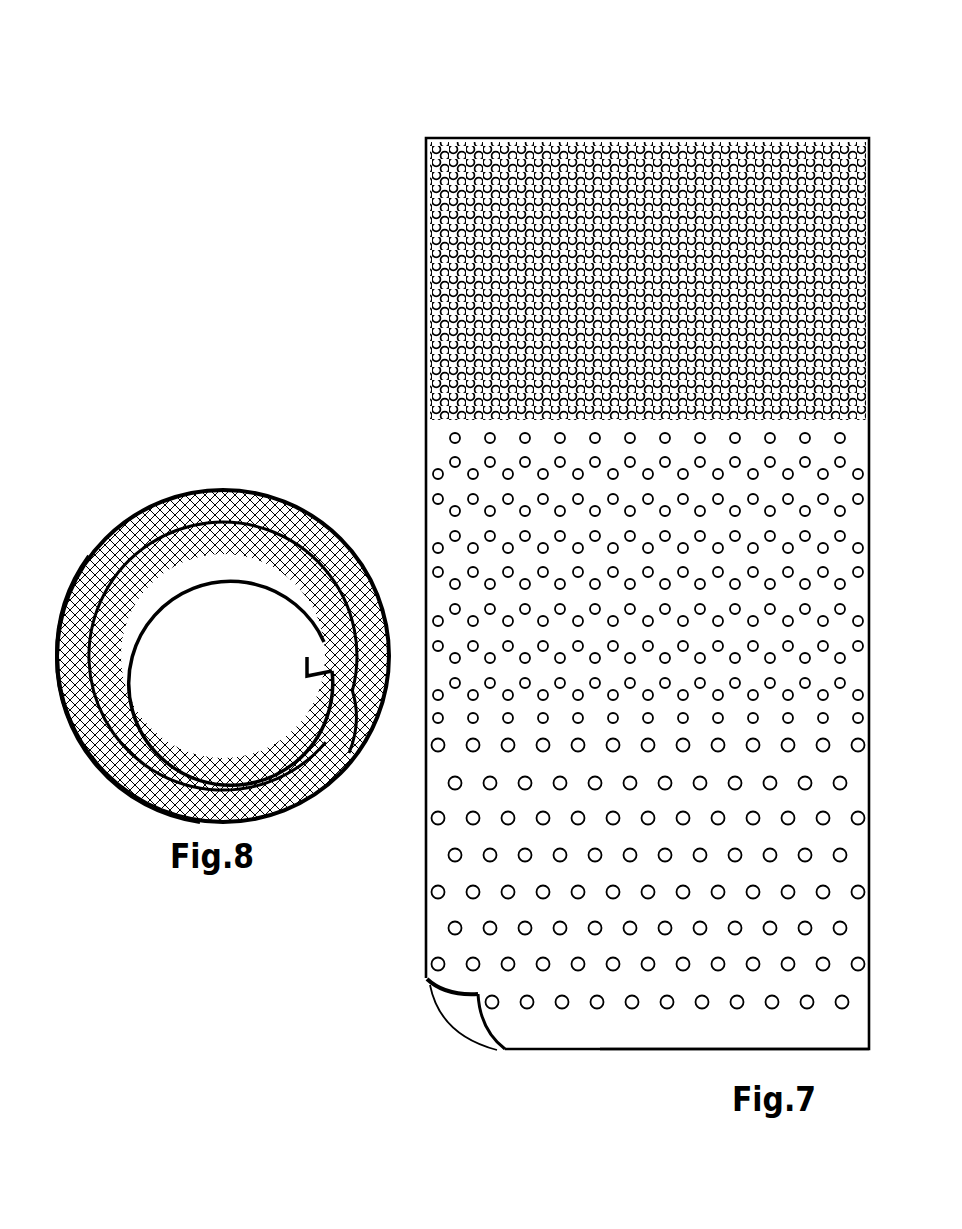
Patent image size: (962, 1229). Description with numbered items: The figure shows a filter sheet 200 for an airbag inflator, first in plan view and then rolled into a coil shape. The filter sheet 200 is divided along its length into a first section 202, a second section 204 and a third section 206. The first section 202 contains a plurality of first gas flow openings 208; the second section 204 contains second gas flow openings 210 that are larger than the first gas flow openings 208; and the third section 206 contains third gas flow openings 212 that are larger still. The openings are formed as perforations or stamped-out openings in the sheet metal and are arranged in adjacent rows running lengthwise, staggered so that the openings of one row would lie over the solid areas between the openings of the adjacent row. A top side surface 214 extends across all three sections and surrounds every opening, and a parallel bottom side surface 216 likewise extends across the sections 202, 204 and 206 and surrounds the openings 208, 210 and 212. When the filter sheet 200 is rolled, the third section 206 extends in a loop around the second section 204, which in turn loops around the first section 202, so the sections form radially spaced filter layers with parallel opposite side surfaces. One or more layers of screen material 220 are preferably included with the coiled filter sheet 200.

In FIG. 7, the filter sheet 200 is at (819, 100).
In FIG. 8, the filter sheet 200 is at (199, 462).
In FIG. 7, the first section 202 is at (409, 189).
In FIG. 8, the first section 202 is at (140, 540).
In FIG. 7, the second section 204 is at (412, 436).
In FIG. 8, the second section 204 is at (100, 578).
In FIG. 7, the third section 206 is at (411, 848).
In FIG. 8, the third section 206 is at (53, 705).
In FIG. 7, the first gas flow openings 208 is at (442, 283).
In FIG. 7, the second gas flow openings 210 is at (430, 546).
In FIG. 7, the third gas flow openings 212 is at (440, 892).
In FIG. 7, the top side surface 214 is at (660, 1032).
In FIG. 7, the bottom side surface 216 is at (468, 1018).
In FIG. 8, the screen material 220 is at (100, 773).